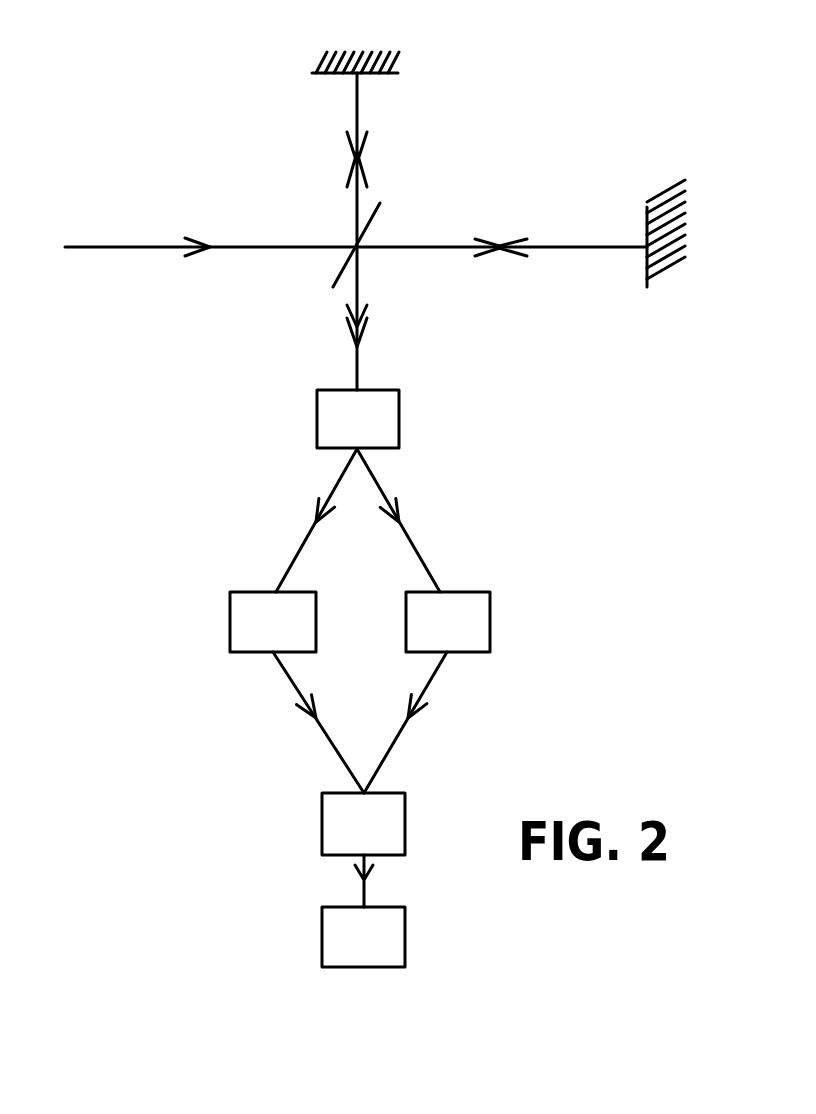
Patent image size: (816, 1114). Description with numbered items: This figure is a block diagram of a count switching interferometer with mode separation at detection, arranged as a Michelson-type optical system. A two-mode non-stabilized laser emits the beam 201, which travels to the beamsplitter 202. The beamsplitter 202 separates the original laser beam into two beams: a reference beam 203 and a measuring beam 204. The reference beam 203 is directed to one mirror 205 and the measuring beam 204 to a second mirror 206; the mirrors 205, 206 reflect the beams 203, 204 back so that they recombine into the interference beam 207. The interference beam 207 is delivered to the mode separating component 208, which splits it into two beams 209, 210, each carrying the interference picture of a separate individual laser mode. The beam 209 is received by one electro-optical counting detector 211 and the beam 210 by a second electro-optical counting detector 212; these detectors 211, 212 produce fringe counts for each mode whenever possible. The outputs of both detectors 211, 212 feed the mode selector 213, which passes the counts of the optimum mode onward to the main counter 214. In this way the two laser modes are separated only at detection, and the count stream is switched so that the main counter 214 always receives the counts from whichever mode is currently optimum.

The beam emitted by a two-mode non-stabilized laser 201 is at (356, 229).
The beamsplitter 202 is at (381, 235).
The reference beam 203 is at (392, 231).
The measuring beam 204 is at (503, 226).
The mirror 205 is at (355, 41).
The mirror 206 is at (696, 233).
The interference beam 207 is at (389, 324).
The mode separating component 208 is at (358, 419).
The beam carrying the interference picture of one mode 209 is at (301, 520).
The beam carrying the interference picture of the other mode 210 is at (413, 520).
The electro-optical counting detector 211 is at (297, 692).
The electro-optical counting detector 212 is at (427, 692).
The mode selector 213 is at (363, 850).
The main counter 214 is at (363, 937).